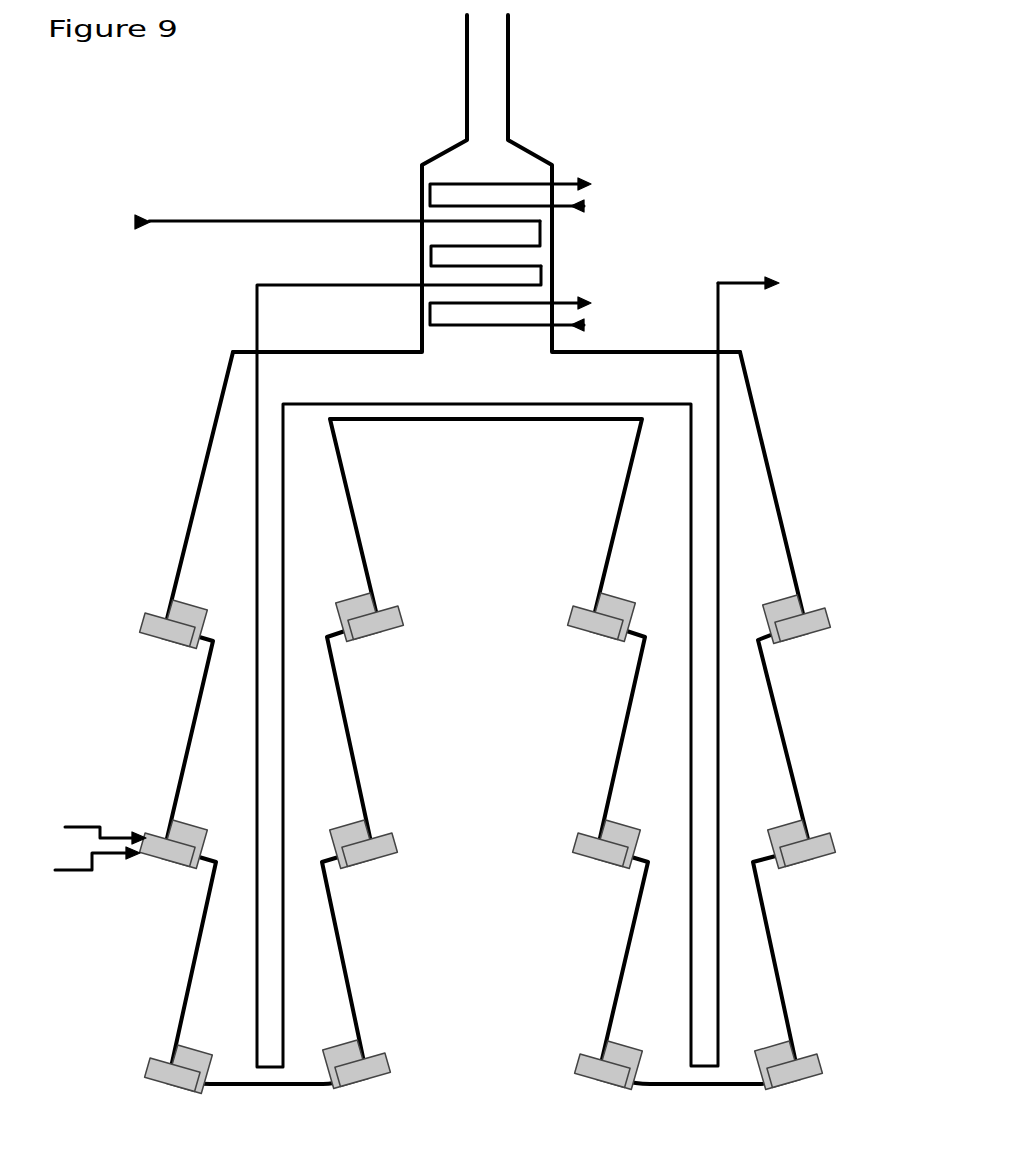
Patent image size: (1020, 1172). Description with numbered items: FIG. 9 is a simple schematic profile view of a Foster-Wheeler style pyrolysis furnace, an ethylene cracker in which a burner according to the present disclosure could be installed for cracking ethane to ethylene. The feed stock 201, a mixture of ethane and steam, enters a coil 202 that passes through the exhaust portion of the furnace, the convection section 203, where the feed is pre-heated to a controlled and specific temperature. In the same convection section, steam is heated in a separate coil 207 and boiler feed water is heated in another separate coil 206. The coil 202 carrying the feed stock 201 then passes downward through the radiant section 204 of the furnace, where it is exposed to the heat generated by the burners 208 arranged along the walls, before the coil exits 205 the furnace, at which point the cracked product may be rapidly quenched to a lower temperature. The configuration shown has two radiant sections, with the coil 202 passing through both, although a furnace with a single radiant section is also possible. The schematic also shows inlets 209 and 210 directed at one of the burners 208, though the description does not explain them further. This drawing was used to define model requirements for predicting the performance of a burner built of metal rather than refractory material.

The feed stock 201 is at (309, 222).
The coil 202 is at (475, 243).
The convection section 203 is at (485, 295).
The radiant section 204 is at (232, 555).
The exit 205 is at (779, 285).
The boiler feed water coil 206 is at (515, 182).
The steam coil 207 is at (525, 303).
The burners 208 is at (177, 615).
The fluid inlet 209 is at (78, 829).
The fluid inlet 210 is at (72, 865).